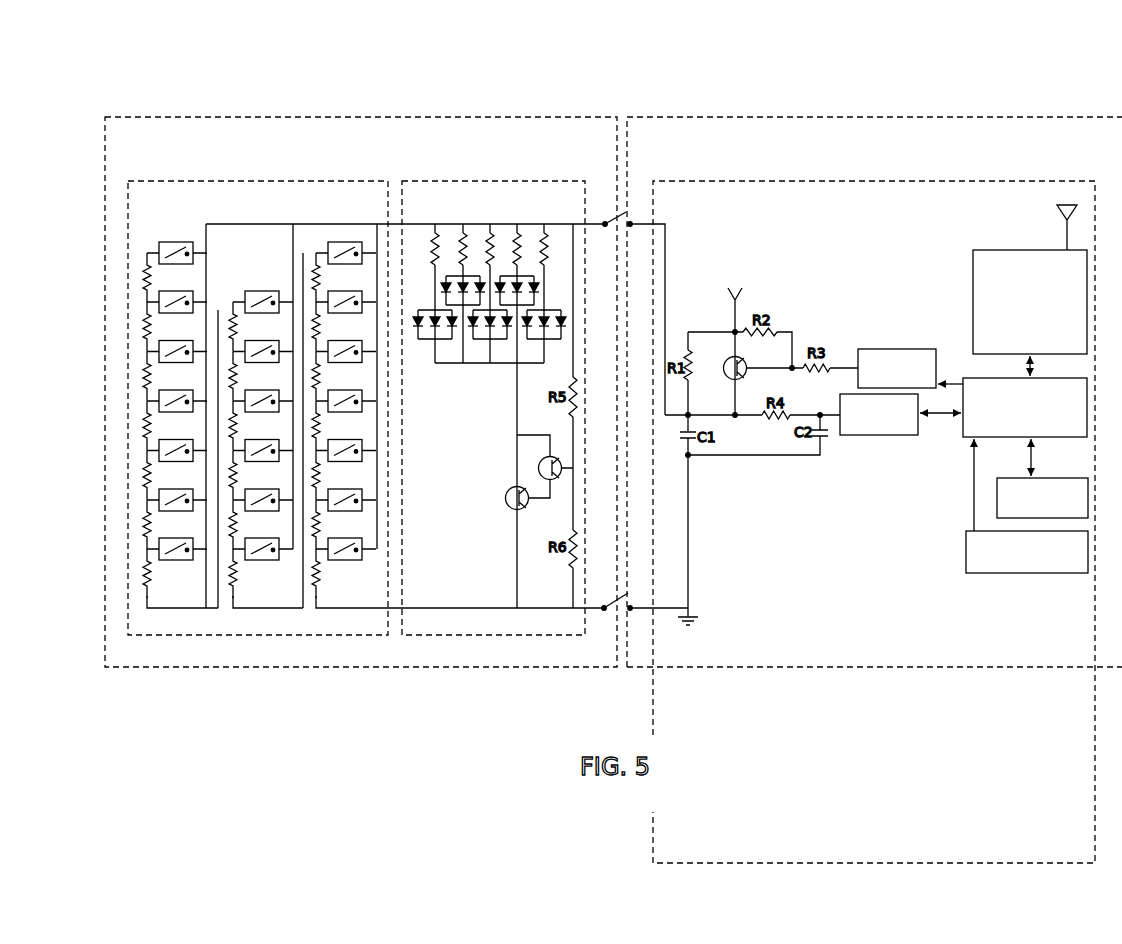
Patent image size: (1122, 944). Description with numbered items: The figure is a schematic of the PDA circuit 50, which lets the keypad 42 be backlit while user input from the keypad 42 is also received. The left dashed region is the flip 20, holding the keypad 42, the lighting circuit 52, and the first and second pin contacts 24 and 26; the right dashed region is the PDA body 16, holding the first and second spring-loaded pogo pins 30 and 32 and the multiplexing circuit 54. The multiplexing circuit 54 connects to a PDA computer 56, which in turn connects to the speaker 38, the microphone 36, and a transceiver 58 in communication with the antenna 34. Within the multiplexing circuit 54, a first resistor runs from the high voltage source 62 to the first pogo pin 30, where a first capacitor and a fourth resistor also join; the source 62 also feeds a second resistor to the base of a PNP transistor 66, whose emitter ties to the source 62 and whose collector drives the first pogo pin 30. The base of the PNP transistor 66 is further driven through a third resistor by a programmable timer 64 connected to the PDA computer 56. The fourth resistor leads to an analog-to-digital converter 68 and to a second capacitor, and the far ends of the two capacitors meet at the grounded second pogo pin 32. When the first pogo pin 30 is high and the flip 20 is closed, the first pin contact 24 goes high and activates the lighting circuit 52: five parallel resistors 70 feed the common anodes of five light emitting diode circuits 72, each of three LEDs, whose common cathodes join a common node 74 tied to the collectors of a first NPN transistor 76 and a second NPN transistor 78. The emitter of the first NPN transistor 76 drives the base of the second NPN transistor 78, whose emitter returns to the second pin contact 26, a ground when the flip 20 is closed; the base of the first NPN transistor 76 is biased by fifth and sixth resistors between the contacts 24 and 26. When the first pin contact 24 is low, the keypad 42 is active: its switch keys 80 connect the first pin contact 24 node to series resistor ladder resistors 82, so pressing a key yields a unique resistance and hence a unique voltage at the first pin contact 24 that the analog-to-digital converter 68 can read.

The PDA body 16 is at (893, 115).
The flip 20 is at (250, 115).
The first pin contact 24 is at (605, 223).
The second pin contact 26 is at (605, 611).
The first spring-loaded pogo pin 30 is at (630, 223).
The second spring-loaded pogo pin 32 is at (631, 612).
The antenna 34 is at (1068, 220).
The microphone 36 is at (1007, 573).
The speaker 38 is at (1088, 493).
The keypad 42 is at (186, 179).
The PDA circuit 50 is at (692, 98).
The lighting circuit 52 is at (486, 179).
The multiplexing circuit 54 is at (698, 179).
The PDA computer 56 is at (1047, 440).
The transceiver 58 is at (986, 244).
The high voltage source 62 is at (745, 292).
The programmable timer 64 is at (870, 349).
The PNP transistor 66 is at (723, 359).
The analog-to-digital converter 68 is at (868, 436).
The resistors 70 is at (426, 247).
The light emitting diode circuits 72 is at (421, 353).
The common node 74 is at (512, 363).
The first NPN transistor 76 is at (561, 457).
The second NPN transistor 78 is at (505, 504).
The keys 80 is at (337, 579).
The resistor ladder resistors 82 is at (302, 285).